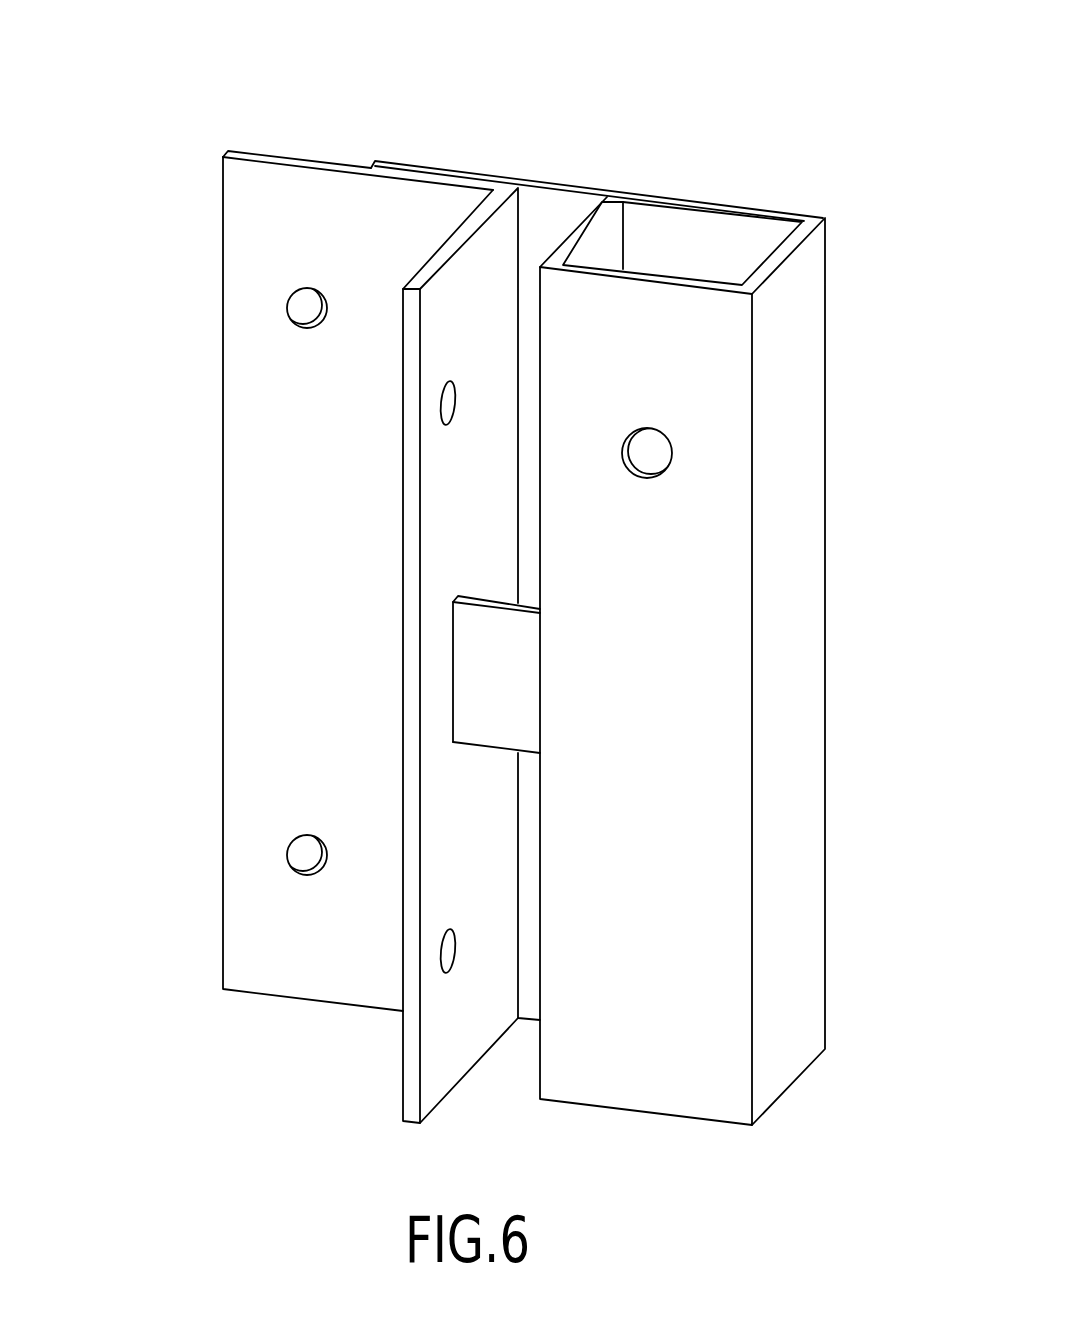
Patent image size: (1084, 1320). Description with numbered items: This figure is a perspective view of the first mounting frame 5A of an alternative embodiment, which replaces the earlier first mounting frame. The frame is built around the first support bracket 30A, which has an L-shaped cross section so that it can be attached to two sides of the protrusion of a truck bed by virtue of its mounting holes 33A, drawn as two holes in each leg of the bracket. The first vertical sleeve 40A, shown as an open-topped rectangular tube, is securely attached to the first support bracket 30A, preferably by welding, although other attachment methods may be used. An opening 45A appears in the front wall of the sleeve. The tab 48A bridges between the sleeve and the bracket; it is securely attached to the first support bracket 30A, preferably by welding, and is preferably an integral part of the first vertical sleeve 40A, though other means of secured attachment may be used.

The first mounting frame 5A is at (527, 100).
The first support bracket 30A is at (223, 203).
The mounting holes 33A is at (447, 404).
The first vertical sleeve 40A is at (733, 206).
The hole 45A is at (653, 458).
The tab 48A is at (497, 690).